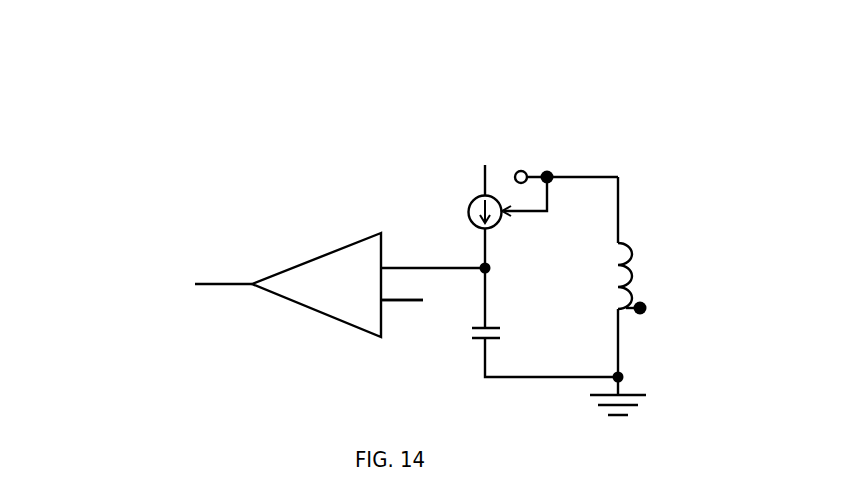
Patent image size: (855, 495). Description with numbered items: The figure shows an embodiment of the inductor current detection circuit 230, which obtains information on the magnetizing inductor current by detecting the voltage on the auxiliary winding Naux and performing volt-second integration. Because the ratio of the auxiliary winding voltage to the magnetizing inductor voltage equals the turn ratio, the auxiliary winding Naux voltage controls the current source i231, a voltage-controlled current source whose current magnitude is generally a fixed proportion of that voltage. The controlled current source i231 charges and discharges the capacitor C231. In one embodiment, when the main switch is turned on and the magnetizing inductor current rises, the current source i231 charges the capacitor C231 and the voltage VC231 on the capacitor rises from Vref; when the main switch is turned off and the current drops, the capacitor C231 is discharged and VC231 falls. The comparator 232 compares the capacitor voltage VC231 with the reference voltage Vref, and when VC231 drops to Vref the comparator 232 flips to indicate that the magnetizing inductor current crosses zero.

The inductor current detection circuit 230 is at (222, 102).
The comparator 232 is at (340, 281).
The current source i231 is at (515, 216).
The voltage on the capacitor VC231 is at (536, 266).
The capacitor C231 is at (545, 322).
The auxiliary winding Naux is at (665, 277).
The reference voltage Vref is at (420, 317).